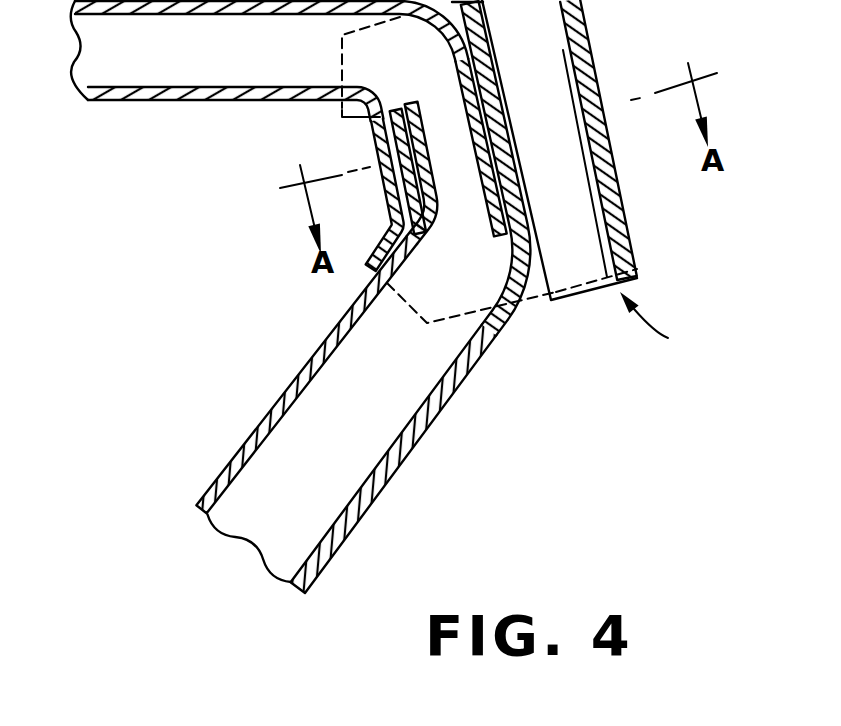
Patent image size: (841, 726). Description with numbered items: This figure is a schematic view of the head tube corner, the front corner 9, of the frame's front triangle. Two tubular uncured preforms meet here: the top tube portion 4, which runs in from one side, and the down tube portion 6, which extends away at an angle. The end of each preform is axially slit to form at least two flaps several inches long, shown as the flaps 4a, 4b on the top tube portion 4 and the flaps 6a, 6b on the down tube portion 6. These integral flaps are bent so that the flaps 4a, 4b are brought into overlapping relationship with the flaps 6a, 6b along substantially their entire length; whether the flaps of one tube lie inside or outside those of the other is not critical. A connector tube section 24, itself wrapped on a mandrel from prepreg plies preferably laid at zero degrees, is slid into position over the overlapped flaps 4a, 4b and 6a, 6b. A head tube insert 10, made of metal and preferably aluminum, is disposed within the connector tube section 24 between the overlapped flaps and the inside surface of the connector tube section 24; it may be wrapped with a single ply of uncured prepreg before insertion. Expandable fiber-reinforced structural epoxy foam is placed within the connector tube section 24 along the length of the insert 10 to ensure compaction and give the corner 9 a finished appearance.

The top tube portion 4 is at (190, 100).
The flap of top tube portion 4a is at (383, 112).
The flap of top tube portion 4b is at (464, 126).
The down tube portion 6 is at (411, 457).
The flap of down tube portion 6a is at (497, 78).
The flap of down tube portion 6b is at (421, 134).
The front corner 9 is at (658, 324).
The head tube insert 10 is at (593, 290).
The connector tube section 24 is at (537, 300).